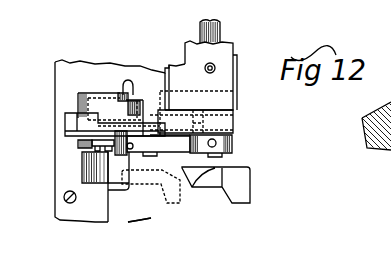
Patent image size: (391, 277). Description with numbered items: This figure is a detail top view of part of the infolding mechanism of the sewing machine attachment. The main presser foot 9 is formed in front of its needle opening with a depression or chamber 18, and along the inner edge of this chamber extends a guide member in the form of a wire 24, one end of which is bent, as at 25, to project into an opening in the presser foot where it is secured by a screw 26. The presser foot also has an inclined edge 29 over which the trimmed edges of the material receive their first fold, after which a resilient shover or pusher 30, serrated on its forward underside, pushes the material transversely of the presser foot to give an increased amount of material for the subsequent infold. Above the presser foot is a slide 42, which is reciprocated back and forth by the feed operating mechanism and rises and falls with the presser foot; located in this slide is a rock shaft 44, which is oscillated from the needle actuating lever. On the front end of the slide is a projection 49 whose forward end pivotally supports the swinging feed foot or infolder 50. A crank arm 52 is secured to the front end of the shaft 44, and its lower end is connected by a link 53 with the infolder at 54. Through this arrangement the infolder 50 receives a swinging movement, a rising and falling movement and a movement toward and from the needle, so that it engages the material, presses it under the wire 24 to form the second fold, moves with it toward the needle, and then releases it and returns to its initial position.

The main presser foot 9 is at (66, 74).
The depression or chamber 18 is at (97, 185).
The wire 24 is at (115, 6).
The bent end 25 is at (127, 192).
The screw 26 is at (66, 204).
The inclined edge 29 is at (130, 190).
The shover or pusher 30 is at (242, 203).
The slide 42 is at (225, 52).
The rock shaft 44 is at (220, 25).
The projection 49 is at (218, 127).
The swinging feed foot or infolder 50 is at (72, 132).
The crank arm 52 is at (233, 145).
The link 53 is at (83, 150).
The connection point of infolder 54 is at (83, 155).